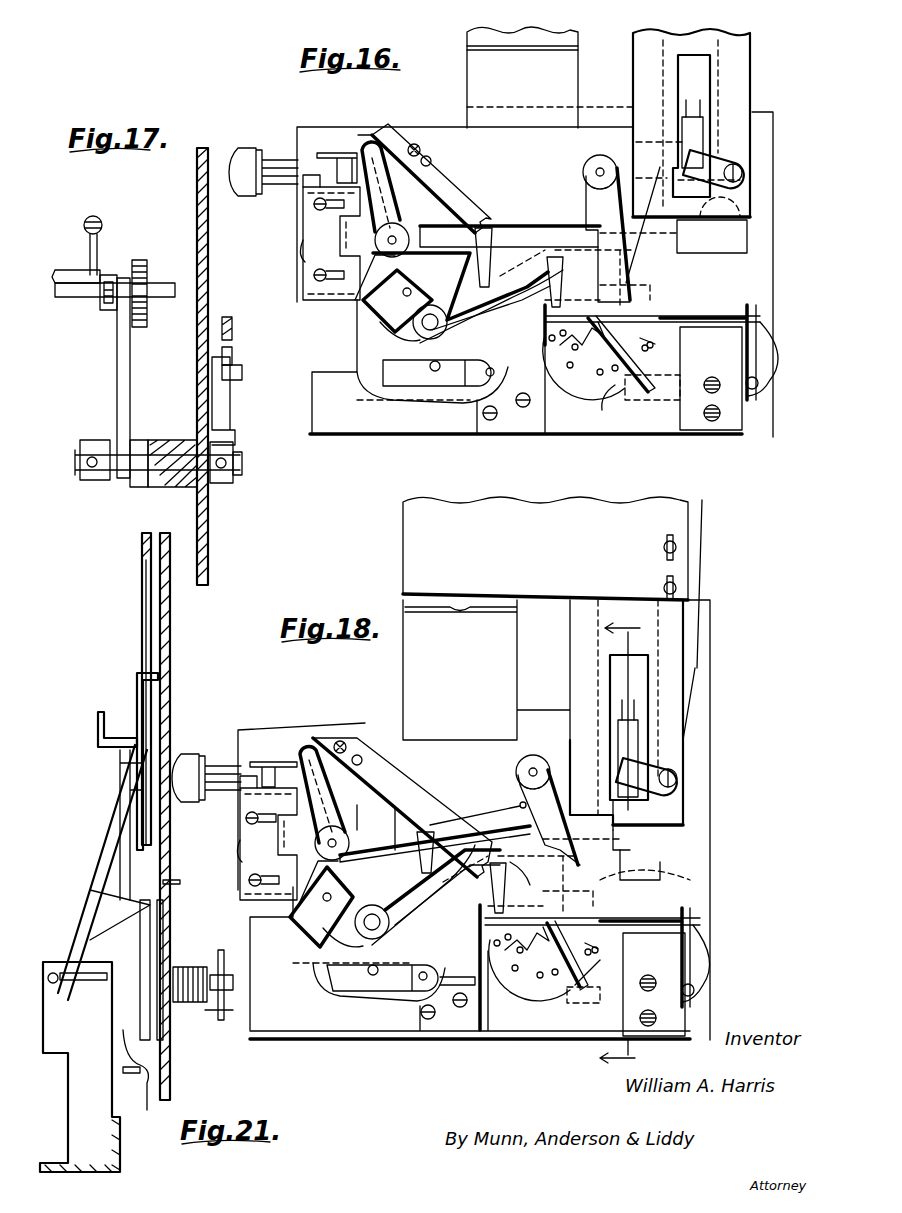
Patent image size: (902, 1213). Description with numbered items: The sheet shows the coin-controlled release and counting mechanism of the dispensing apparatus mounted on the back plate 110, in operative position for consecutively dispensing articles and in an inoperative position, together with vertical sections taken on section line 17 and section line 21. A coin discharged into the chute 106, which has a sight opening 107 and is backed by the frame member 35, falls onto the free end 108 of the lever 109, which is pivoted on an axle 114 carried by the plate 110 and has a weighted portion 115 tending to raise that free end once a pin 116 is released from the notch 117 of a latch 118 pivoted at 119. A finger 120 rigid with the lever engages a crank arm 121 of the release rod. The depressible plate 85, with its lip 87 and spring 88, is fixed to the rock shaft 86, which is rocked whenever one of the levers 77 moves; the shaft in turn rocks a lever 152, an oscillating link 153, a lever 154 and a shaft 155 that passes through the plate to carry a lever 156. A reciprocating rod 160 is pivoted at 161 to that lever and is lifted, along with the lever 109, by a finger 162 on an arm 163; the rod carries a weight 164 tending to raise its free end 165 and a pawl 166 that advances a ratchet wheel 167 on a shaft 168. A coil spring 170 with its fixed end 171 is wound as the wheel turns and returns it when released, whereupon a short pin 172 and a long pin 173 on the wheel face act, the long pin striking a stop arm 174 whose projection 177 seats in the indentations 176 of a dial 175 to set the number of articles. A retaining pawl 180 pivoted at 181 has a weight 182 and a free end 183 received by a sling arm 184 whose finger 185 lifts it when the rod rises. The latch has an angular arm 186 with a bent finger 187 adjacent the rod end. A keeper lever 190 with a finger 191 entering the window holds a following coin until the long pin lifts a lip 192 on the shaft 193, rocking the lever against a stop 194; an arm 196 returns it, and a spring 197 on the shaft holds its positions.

In FIG. 18, the section line 17 is at (360, 812).
In FIG. 18, the section line 21 is at (620, 842).
In FIG. 16, the frame bracket 35 is at (758, 196).
In FIG. 18, the frame bracket 35 is at (705, 786).
In FIG. 16, the levers 77 is at (302, 256).
In FIG. 18, the levers 77 is at (238, 826).
In FIG. 17, the depressible plate 85 is at (75, 273).
In FIG. 17, the shaft 86 is at (90, 298).
In FIG. 17, the lip 87 is at (97, 245).
In FIG. 17, the spring 88 is at (100, 220).
In FIG. 16, the chute 106 is at (735, 80).
In FIG. 21, the chute 106 is at (142, 626).
In FIG. 18, the chute 106 is at (690, 672).
In FIG. 16, the sight opening 107 is at (715, 70).
In FIG. 18, the sight opening 107 is at (700, 650).
In FIG. 18, the free end of lever 108 is at (620, 828).
In FIG. 16, the lever 109 is at (458, 222).
In FIG. 17, the lever 109 is at (233, 328).
In FIG. 18, the lever 109 is at (425, 835).
In FIG. 16, the back plate 110 is at (470, 150).
In FIG. 17, the back plate 110 is at (197, 180).
In FIG. 21, the back plate 110 is at (125, 840).
In FIG. 18, the back plate 110 is at (420, 753).
In FIG. 16, the axle 114 is at (388, 240).
In FIG. 18, the axle 114 is at (300, 855).
In FIG. 16, the weighted portion 115 is at (310, 222).
In FIG. 18, the weighted portion 115 is at (260, 840).
In FIG. 18, the pin 116 is at (470, 817).
In FIG. 16, the notch 117 is at (600, 232).
In FIG. 18, the notch 117 is at (565, 848).
In FIG. 16, the latch 118 is at (585, 185).
In FIG. 18, the latch 118 is at (520, 780).
In FIG. 16, the pivot 119 is at (596, 170).
In FIG. 18, the pivot 119 is at (530, 768).
In FIG. 16, the finger 120 is at (337, 172).
In FIG. 18, the finger 120 is at (280, 765).
In FIG. 16, the crank arm 121 is at (340, 162).
In FIG. 18, the crank arm 121 is at (275, 775).
In FIG. 17, the lever 152 is at (130, 300).
In FIG. 17, the oscillating link 153 is at (118, 362).
In FIG. 17, the lever 154 is at (135, 478).
In FIG. 16, the shaft 155 is at (380, 338).
In FIG. 17, the shaft 155 is at (243, 458).
In FIG. 18, the shaft 155 is at (320, 950).
In FIG. 16, the lever 156 is at (412, 296).
In FIG. 17, the lever 156 is at (230, 400).
In FIG. 18, the lever 156 is at (355, 895).
In FIG. 17, the reciprocating rod 160 is at (233, 355).
In FIG. 18, the reciprocating rod 160 is at (398, 810).
In FIG. 16, the pivotal connection 161 is at (448, 250).
In FIG. 17, the pivotal connection 161 is at (240, 372).
In FIG. 18, the pivotal connection 161 is at (352, 878).
In FIG. 16, the finger 162 is at (498, 300).
In FIG. 18, the finger 162 is at (410, 920).
In FIG. 16, the arm 163 is at (496, 245).
In FIG. 18, the arm 163 is at (432, 835).
In FIG. 16, the weight 164 is at (378, 300).
In FIG. 18, the weight 164 is at (320, 915).
In FIG. 18, the free end of rod 165 is at (622, 848).
In FIG. 18, the pawl 166 is at (530, 866).
In FIG. 16, the ratchet wheel 167 is at (660, 326).
In FIG. 21, the ratchet wheel 167 is at (150, 925).
In FIG. 18, the ratchet wheel 167 is at (600, 932).
In FIG. 21, the shaft 168 is at (235, 968).
In FIG. 18, the shaft 168 is at (485, 975).
In FIG. 21, the coil spring 170 is at (190, 1005).
In FIG. 21, the spring end 171 is at (163, 907).
In FIG. 16, the pin 172 is at (550, 340).
In FIG. 21, the pin 172 is at (160, 975).
In FIG. 18, the pin 172 is at (485, 950).
In FIG. 16, the long pin 173 is at (585, 365).
In FIG. 21, the long pin 173 is at (105, 1027).
In FIG. 18, the long pin 173 is at (540, 975).
In FIG. 16, the stop arm 174 is at (622, 360).
In FIG. 21, the stop arm 174 is at (148, 1060).
In FIG. 18, the stop arm 174 is at (570, 995).
In FIG. 16, the dial 175 is at (545, 395).
In FIG. 18, the dial 175 is at (500, 1000).
In FIG. 16, the indentations 176 is at (655, 346).
In FIG. 18, the indentations 176 is at (598, 951).
In FIG. 16, the projection 177 is at (615, 388).
In FIG. 21, the projection 177 is at (142, 1085).
In FIG. 18, the projection 177 is at (595, 975).
In FIG. 16, the retaining pawl 180 is at (532, 338).
In FIG. 18, the retaining pawl 180 is at (408, 938).
In FIG. 16, the pivot 181 is at (420, 374).
In FIG. 18, the pivot 181 is at (340, 990).
In FIG. 16, the weight 182 is at (385, 360).
In FIG. 18, the weight 182 is at (335, 977).
In FIG. 16, the free end of pawl 183 is at (490, 250).
In FIG. 18, the free end of pawl 183 is at (478, 848).
In FIG. 16, the arm 184 is at (556, 262).
In FIG. 18, the arm 184 is at (495, 862).
In FIG. 16, the finger 185 is at (545, 320).
In FIG. 18, the finger 185 is at (470, 895).
In FIG. 16, the angularly disposed arm 186 is at (700, 270).
In FIG. 18, the angularly disposed arm 186 is at (690, 880).
In FIG. 16, the finger 187 is at (705, 258).
In FIG. 18, the finger 187 is at (622, 868).
In FIG. 16, the lever 190 is at (695, 138).
In FIG. 21, the lever 190 is at (125, 858).
In FIG. 18, the lever 190 is at (620, 770).
In FIG. 16, the finger 191 is at (700, 122).
In FIG. 21, the finger 191 is at (140, 656).
In FIG. 18, the finger 191 is at (640, 740).
In FIG. 21, the lip 192 is at (95, 915).
In FIG. 16, the shaft 193 is at (750, 310).
In FIG. 21, the shaft 193 is at (55, 970).
In FIG. 18, the shaft 193 is at (688, 915).
In FIG. 16, the stop 194 is at (705, 160).
In FIG. 21, the stop 194 is at (100, 740).
In FIG. 18, the stop 194 is at (650, 770).
In FIG. 21, the arm 196 is at (100, 860).
In FIG. 16, the spring 197 is at (763, 352).
In FIG. 18, the spring 197 is at (705, 955).